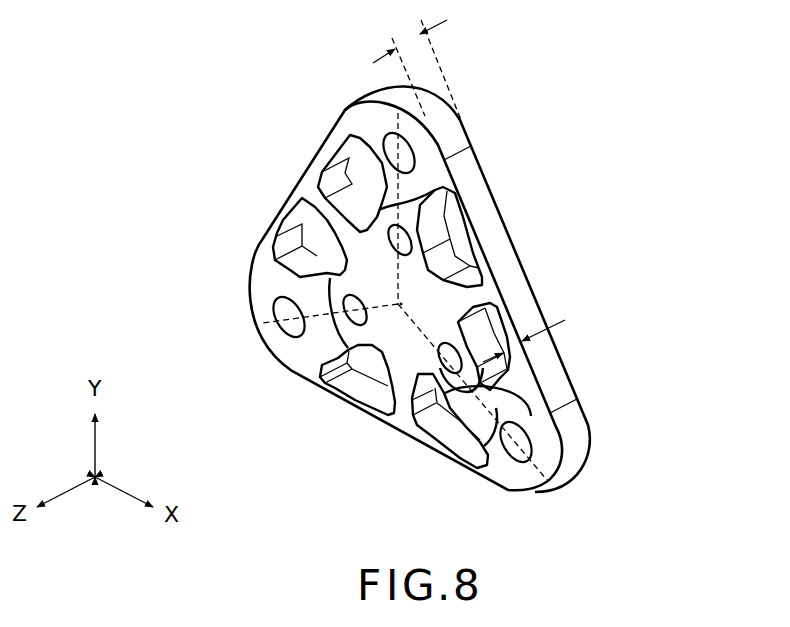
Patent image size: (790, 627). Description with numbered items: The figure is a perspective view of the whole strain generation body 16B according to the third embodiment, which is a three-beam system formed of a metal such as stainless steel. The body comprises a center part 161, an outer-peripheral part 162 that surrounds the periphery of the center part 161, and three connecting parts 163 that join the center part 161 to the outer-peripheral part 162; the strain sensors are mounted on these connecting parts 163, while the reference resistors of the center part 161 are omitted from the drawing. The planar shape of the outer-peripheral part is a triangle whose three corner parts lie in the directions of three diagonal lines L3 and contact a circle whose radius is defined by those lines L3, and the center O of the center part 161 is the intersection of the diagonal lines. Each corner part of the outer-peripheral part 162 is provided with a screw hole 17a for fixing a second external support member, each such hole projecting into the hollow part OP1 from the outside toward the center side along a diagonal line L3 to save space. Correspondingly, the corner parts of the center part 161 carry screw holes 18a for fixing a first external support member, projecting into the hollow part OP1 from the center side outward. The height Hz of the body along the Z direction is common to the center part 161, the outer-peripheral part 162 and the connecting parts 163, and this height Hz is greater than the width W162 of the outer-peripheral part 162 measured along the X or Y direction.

The strain generation body 16B is at (406, 266).
The center part 161 is at (372, 283).
The outer-peripheral part 162 is at (503, 257).
The connecting part 163 is at (325, 222).
The screw hole 17a is at (387, 146).
The screw hole 18a is at (448, 373).
The hollow part OP1 is at (356, 172).
The diagonal line L3 is at (397, 287).
The center O is at (402, 304).
The height Hz is at (417, 65).
The width of the outer-peripheral part W162 is at (542, 357).